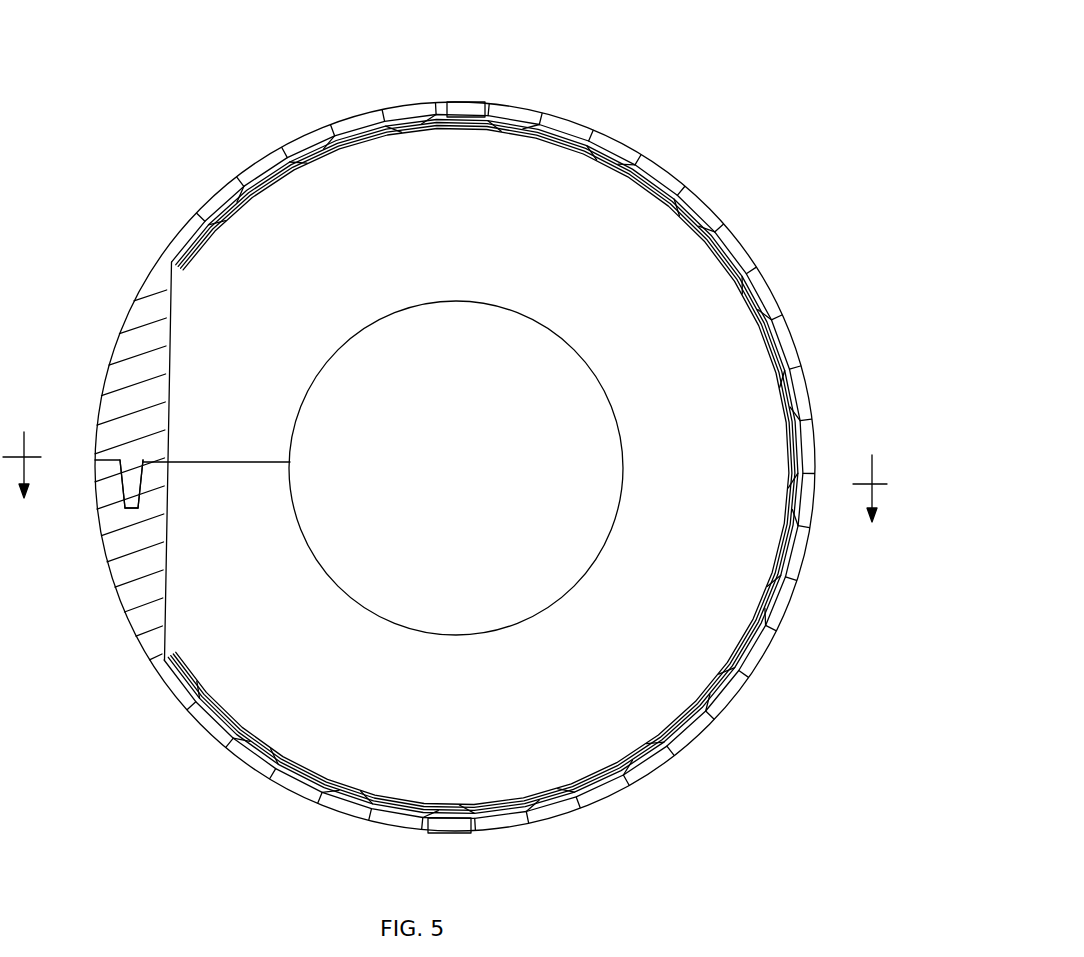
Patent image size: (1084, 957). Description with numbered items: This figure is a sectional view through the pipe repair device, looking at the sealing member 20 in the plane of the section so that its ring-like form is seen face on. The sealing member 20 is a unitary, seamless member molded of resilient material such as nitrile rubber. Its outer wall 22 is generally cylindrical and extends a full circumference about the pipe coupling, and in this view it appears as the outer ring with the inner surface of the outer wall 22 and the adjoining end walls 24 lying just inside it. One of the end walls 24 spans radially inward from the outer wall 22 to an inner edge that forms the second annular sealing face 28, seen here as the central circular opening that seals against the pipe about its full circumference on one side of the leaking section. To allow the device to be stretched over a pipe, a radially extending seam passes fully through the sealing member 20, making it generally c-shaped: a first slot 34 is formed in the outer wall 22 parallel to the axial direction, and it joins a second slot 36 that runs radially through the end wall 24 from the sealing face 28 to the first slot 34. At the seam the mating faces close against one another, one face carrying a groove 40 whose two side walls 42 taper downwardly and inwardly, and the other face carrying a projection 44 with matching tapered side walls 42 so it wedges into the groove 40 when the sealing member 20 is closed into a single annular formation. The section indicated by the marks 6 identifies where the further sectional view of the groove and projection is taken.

The sealing member 20 is at (184, 102).
The outer wall 22 is at (679, 192).
The end walls 24 is at (520, 209).
The second annular sealing face 28 is at (445, 302).
The first slot 34 is at (242, 463).
The second slots 36 is at (107, 460).
The groove 40 is at (132, 508).
The side walls 42 is at (195, 510).
The projection 44 is at (128, 503).
The section line 6- 6 is at (445, 450).